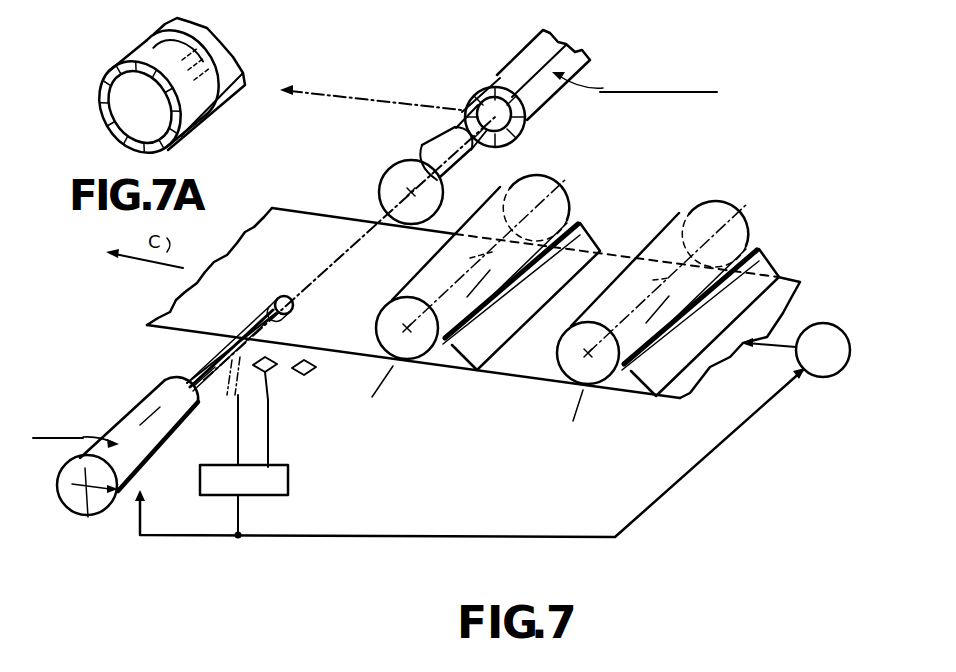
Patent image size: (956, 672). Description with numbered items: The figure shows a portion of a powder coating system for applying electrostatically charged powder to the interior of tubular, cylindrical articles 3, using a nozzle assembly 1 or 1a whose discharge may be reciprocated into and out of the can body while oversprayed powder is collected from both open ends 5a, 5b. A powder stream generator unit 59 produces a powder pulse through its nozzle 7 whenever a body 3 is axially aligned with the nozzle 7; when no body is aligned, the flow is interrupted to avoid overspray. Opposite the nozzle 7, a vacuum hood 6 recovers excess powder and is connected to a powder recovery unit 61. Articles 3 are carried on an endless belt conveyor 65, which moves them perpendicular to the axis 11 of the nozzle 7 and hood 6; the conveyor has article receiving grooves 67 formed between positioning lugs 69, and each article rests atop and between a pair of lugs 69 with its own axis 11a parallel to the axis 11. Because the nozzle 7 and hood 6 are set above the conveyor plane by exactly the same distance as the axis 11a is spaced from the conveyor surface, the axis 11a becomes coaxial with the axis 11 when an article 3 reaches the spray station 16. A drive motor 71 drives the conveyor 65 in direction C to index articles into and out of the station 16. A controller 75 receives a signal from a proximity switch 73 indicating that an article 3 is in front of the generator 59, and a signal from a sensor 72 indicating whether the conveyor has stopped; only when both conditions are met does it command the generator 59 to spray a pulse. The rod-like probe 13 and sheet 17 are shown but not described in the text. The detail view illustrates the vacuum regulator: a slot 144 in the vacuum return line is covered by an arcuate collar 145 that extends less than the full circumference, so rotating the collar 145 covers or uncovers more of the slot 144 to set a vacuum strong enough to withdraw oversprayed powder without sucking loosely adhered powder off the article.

In FIG. 7, the nozzle assembly 1 is at (243, 307).
In FIG. 7, the nozzle assembly 1a is at (207, 366).
In FIG. 7, the tubular cylindrical article 3 is at (673, 222).
In FIG. 7, the open end 5a is at (407, 368).
In FIG. 7, the open end 5b is at (548, 167).
In FIG. 7, the vacuum hood 6 is at (390, 153).
In FIG. 7, the nozzle 7 is at (275, 298).
In FIG. 7, the axis 11 is at (226, 387).
In FIG. 7, the axis of tubular article 11a is at (553, 273).
In FIG. 7, the probe rod 13 is at (245, 328).
In FIG. 7, the spray station 16 is at (330, 245).
In FIG. 7A, the sheet strip 17 is at (260, 87).
In FIG. 7, the sheet strip 17 is at (455, 127).
In FIG. 7, the powder stream generator unit 59 is at (133, 408).
In FIG. 7, the powder recovery unit 61 is at (580, 53).
In FIG. 7, the endless belt conveyor 65 is at (700, 384).
In FIG. 7, the article receiving groove 67 is at (466, 408).
In FIG. 7, the positioning lug 69 is at (318, 350).
In FIG. 7, the drive motor 71 is at (841, 328).
In FIG. 7, the sensor 72 is at (297, 377).
In FIG. 7, the proximity switch 73 is at (313, 377).
In FIG. 7, the controller 75 is at (290, 480).
In FIG. 7A, the slot 144 is at (240, 66).
In FIG. 7, the slot 144 is at (527, 120).
In FIG. 7A, the arcuate collar 145 is at (140, 58).
In FIG. 7, the arcuate collar 145 is at (497, 80).